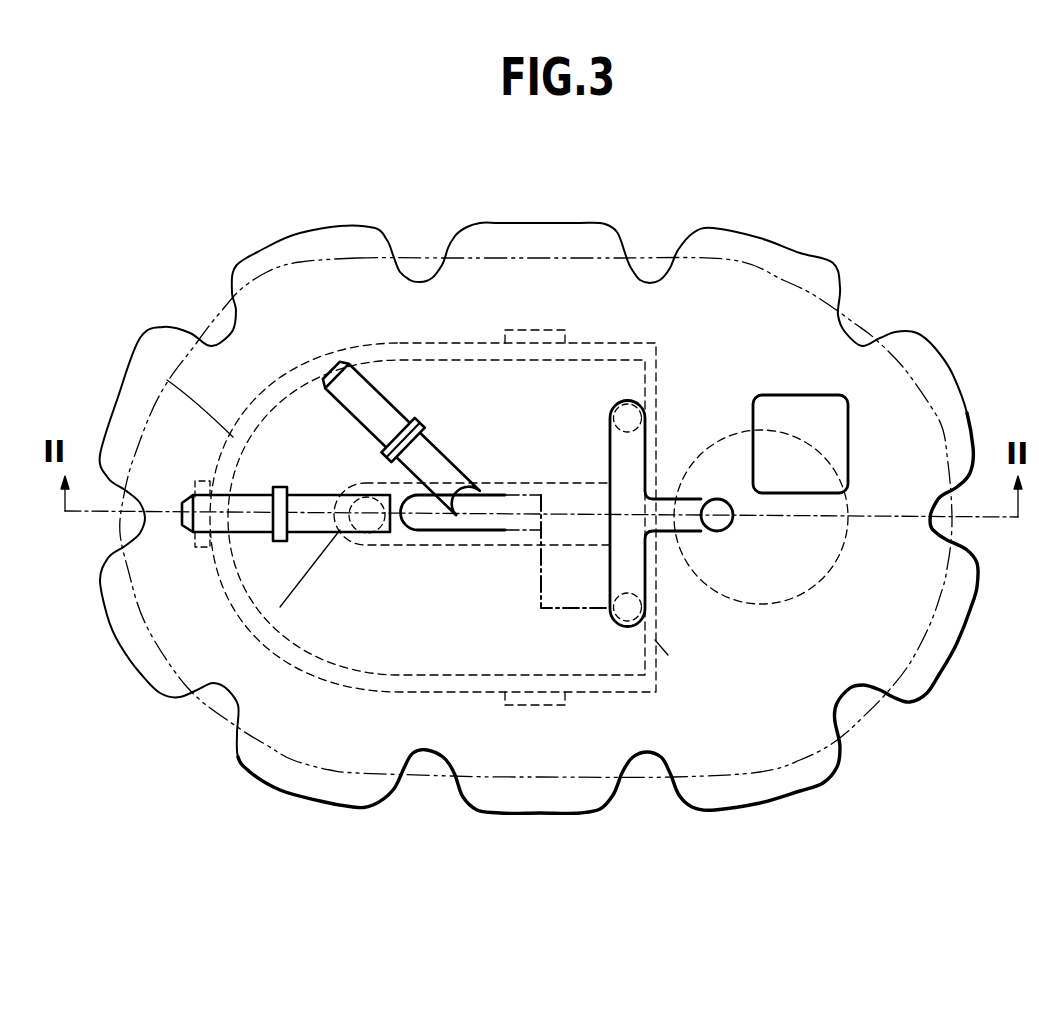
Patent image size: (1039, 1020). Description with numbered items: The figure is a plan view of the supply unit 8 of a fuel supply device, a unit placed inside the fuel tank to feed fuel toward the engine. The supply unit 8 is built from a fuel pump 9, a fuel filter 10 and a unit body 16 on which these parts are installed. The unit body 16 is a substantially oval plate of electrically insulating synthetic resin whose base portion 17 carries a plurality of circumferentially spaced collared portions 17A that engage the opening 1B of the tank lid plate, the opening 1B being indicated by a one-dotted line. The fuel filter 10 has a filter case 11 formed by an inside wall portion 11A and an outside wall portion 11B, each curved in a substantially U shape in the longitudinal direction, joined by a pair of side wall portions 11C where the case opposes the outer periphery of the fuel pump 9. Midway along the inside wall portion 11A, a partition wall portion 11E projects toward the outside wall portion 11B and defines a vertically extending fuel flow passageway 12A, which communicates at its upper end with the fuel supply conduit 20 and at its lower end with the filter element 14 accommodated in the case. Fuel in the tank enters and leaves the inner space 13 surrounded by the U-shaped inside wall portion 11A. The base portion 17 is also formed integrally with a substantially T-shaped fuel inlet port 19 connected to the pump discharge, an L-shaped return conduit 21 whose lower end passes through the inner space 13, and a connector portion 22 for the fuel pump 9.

The opening 1B is at (327, 772).
The supply unit 8 is at (812, 234).
The fuel pump 9 is at (820, 563).
The fuel filter 10 is at (436, 330).
The filter case 11 is at (272, 380).
The inside wall portion 11A is at (482, 520).
The outside wall portion 11B is at (167, 380).
The side wall portion 11C is at (667, 380).
The partition wall portion 11E is at (280, 607).
The fuel flow passageway 12A is at (372, 520).
The inner space 13 is at (560, 520).
The filter element 14 is at (323, 645).
The unit body 16 is at (917, 335).
The base portion 17 is at (707, 270).
The collared portion 17A is at (117, 613).
The fuel inlet port 19 is at (623, 410).
The fuel supply conduit 20 is at (213, 508).
The return conduit 21 is at (357, 382).
The connector portion 22 is at (820, 407).